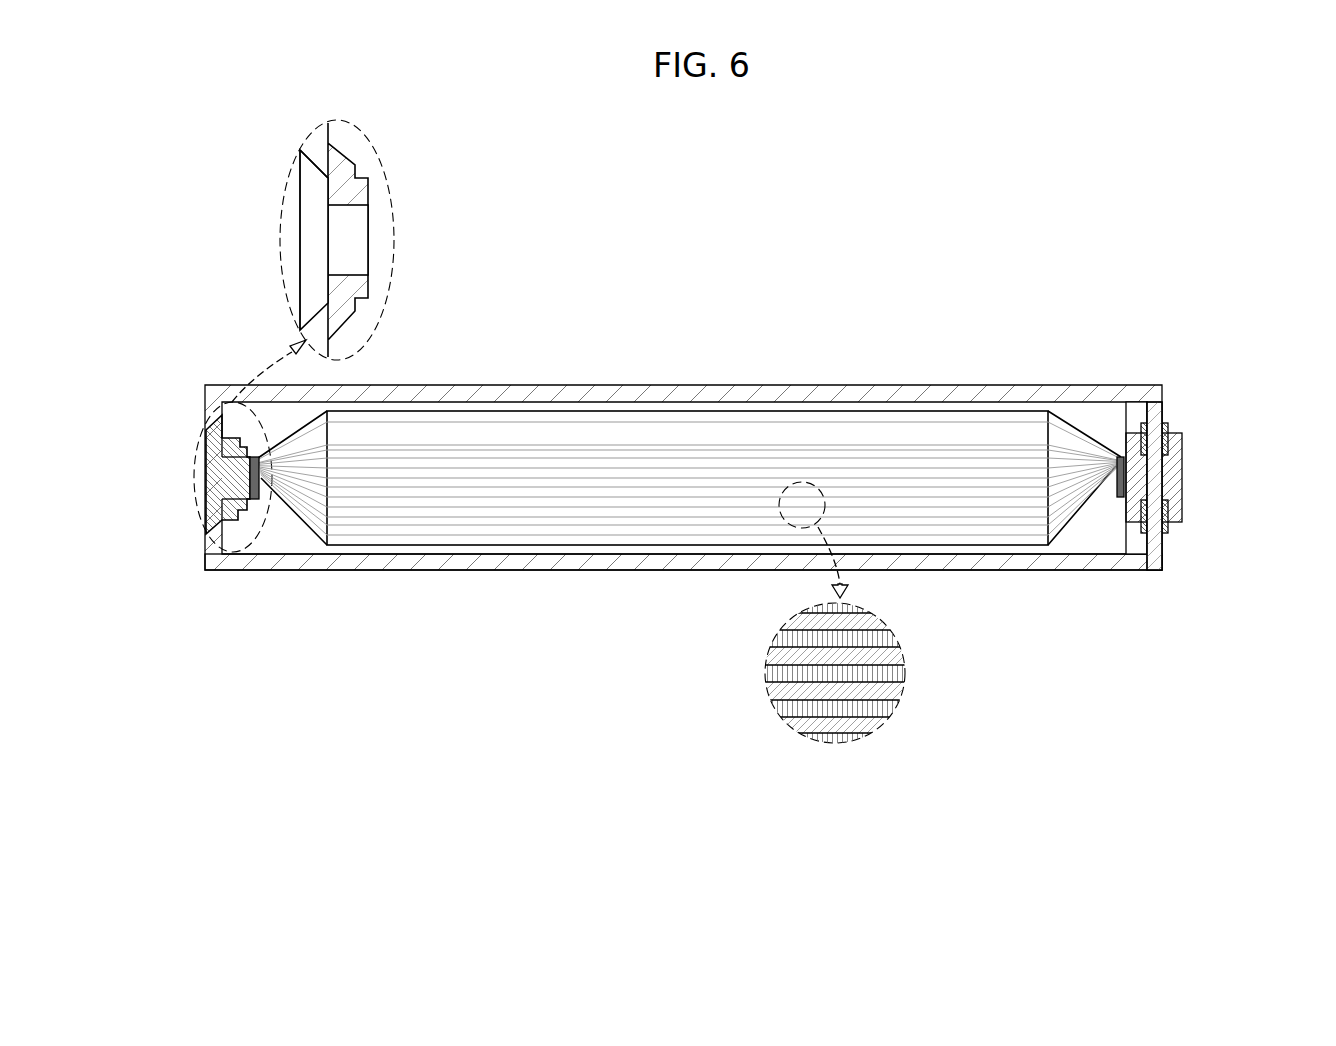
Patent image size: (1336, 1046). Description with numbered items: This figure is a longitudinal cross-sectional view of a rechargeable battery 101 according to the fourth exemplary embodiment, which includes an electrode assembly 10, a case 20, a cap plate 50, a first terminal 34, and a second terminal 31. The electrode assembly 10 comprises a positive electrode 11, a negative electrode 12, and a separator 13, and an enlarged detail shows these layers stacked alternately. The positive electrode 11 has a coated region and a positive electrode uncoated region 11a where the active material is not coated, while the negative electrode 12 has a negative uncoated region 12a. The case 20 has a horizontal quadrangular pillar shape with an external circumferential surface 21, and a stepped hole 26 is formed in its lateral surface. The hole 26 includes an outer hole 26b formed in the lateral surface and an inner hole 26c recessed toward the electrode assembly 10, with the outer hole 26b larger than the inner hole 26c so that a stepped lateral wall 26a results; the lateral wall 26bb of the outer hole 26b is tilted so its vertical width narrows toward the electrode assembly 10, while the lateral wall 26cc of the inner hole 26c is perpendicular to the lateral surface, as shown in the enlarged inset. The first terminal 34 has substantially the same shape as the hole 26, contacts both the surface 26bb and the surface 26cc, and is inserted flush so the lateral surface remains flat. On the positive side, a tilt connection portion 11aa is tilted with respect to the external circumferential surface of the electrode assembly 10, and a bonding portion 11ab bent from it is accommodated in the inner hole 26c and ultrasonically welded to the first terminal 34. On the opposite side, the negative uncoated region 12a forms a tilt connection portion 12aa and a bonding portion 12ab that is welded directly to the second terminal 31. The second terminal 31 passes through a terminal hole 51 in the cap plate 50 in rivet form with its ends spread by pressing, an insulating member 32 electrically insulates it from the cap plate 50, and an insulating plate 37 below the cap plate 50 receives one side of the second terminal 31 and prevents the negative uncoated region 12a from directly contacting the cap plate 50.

The rechargeable battery 101 is at (688, 278).
The electrode assembly 10 is at (612, 540).
The positive electrode 11 is at (788, 625).
The positive electrode uncoated region 11a is at (345, 657).
The tilt connection portion 11aa is at (298, 503).
The bonding portion 11ab is at (258, 492).
The negative electrode 12 is at (780, 657).
The negative uncoated region 12a is at (1097, 630).
The tilt connection portion 12aa is at (1070, 505).
The bonding portion 12ab is at (1120, 497).
The separator 13 is at (783, 707).
The case 20 is at (506, 584).
The external circumferential surface 21 is at (428, 562).
The hole 26 is at (457, 172).
The lateral wall 26a is at (197, 158).
The outer hole 26b is at (310, 252).
The lateral wall of the outer hole 26bb is at (328, 175).
The inner hole 26c is at (340, 267).
The lateral wall of the inner hole 26cc is at (340, 207).
The second terminal 31 is at (1173, 463).
The insulating member 32 is at (1168, 425).
The first terminal 34 is at (210, 484).
The insulating plate 37 is at (1136, 547).
The cap plate 50 is at (1157, 547).
The terminal hole 51 is at (1162, 487).